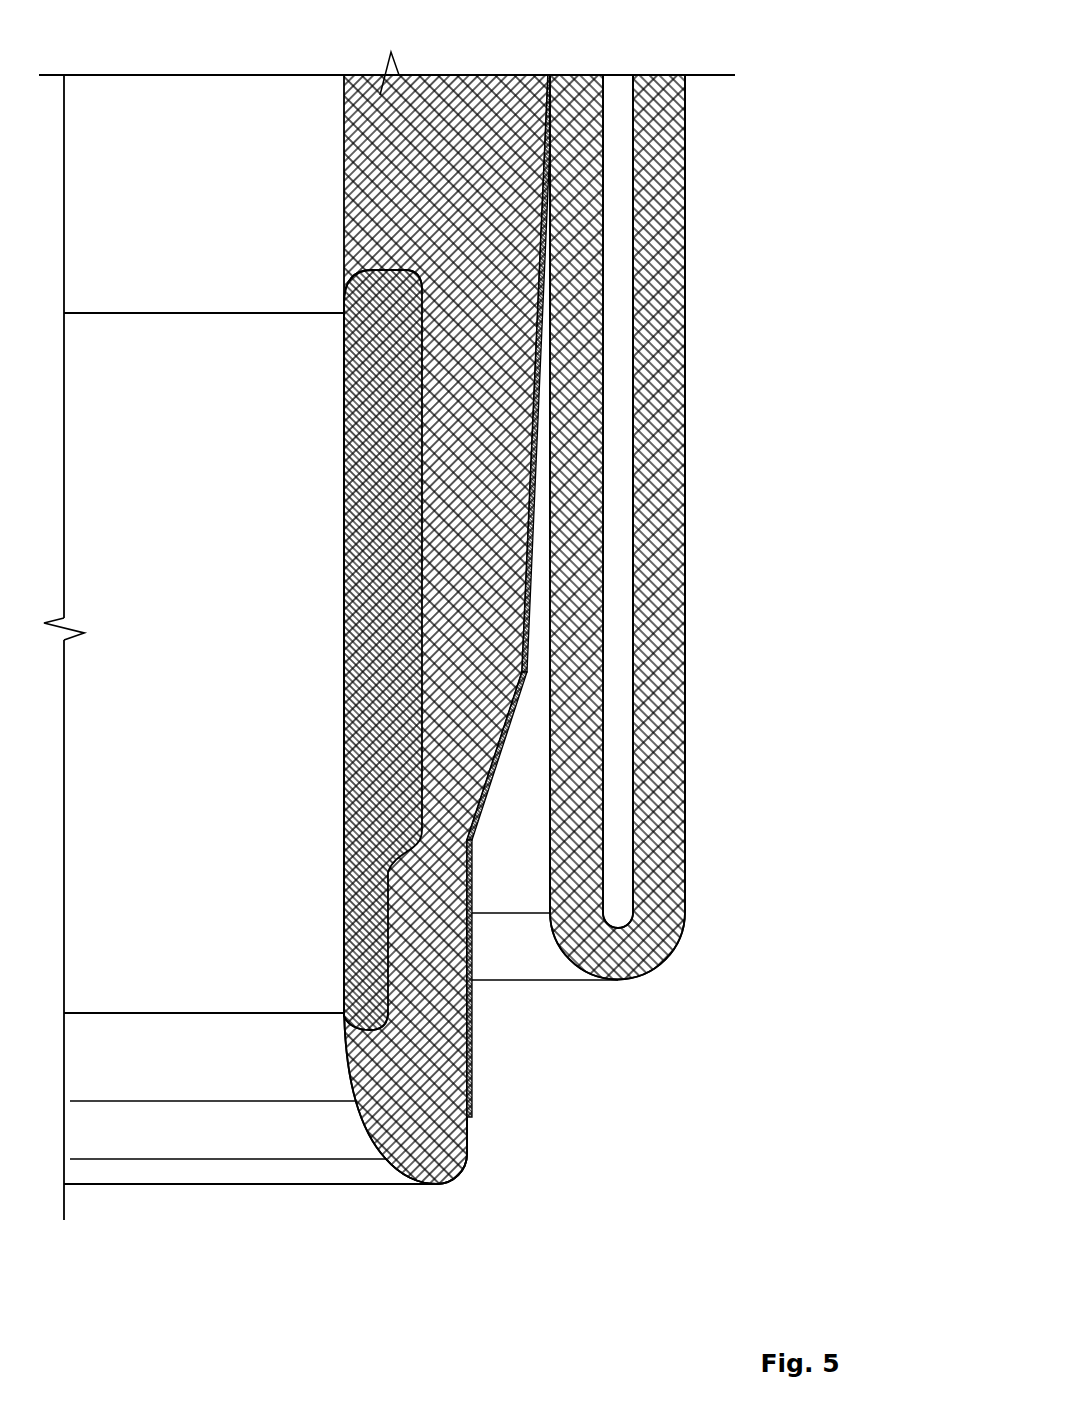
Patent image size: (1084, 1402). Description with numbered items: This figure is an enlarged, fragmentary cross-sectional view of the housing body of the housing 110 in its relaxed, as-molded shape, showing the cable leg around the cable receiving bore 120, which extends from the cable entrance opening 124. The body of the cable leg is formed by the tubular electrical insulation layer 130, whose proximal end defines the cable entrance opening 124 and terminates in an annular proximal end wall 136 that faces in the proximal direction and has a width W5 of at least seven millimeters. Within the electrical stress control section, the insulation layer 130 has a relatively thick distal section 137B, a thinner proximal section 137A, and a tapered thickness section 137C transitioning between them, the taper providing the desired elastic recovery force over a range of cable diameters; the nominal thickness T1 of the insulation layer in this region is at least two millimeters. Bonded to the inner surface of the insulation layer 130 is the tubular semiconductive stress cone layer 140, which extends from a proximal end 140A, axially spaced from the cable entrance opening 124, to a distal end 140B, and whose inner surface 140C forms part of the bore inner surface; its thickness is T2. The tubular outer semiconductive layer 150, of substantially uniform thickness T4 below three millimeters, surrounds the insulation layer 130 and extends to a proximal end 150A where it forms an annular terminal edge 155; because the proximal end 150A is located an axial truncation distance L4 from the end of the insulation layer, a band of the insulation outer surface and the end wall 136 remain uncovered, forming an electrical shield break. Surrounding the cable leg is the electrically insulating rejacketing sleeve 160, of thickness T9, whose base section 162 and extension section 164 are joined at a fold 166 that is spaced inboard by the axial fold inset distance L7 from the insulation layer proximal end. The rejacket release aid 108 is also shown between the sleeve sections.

The housing 110 is at (416, 39).
The cable receiving bore 120 is at (232, 647).
The cable entrance opening 124 is at (206, 1186).
The insulation layer 130 is at (564, 618).
The proximal end wall 136 is at (430, 1186).
The thinner proximal section 137A is at (470, 1036).
The thick distal section 137B is at (535, 355).
The tapered thickness section 137C is at (493, 770).
The stress cone layer 140 is at (356, 527).
The proximal end of stress control layer 140A is at (370, 266).
The distal end of stress control layer 140B is at (356, 1050).
The inner surface of stress control layer 140C is at (344, 478).
The outer semiconductive layer 150 is at (472, 1068).
The proximal end of outer semiconductive layer 150A is at (545, 1104).
The terminal edge 155 is at (470, 1122).
The rejacketing sleeve 160 is at (664, 527).
The base section 162 is at (584, 537).
The extension section 164 is at (678, 596).
The fold 166 is at (620, 955).
The rejacket release aid 108 is at (620, 757).
The nominal thickness of insulation layer T1 is at (388, 935).
The thickness of stress cone layer T2 is at (422, 383).
The thickness of semiconductive layer T4 is at (437, 1003).
The thickness of rejacketing sleeve T9 is at (606, 238).
The axial truncation distance L4 is at (581, 1183).
The axial fold inset distance L7 is at (674, 1183).
The width of proximal end wall surface W5 is at (488, 1287).